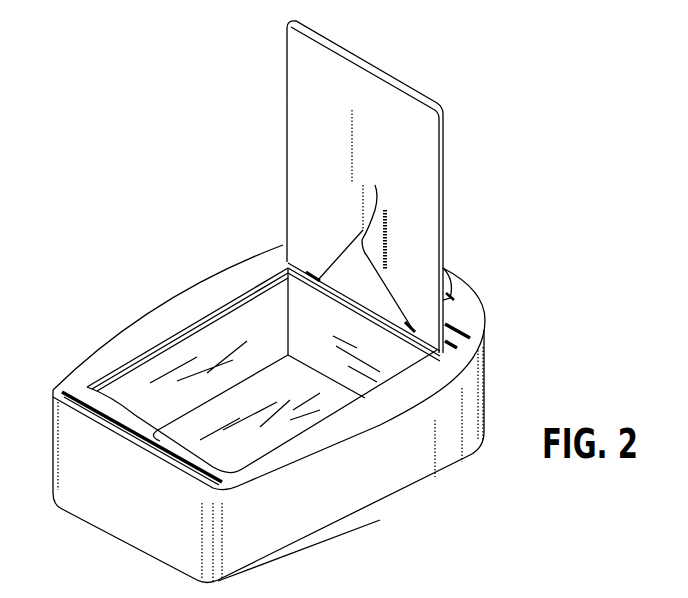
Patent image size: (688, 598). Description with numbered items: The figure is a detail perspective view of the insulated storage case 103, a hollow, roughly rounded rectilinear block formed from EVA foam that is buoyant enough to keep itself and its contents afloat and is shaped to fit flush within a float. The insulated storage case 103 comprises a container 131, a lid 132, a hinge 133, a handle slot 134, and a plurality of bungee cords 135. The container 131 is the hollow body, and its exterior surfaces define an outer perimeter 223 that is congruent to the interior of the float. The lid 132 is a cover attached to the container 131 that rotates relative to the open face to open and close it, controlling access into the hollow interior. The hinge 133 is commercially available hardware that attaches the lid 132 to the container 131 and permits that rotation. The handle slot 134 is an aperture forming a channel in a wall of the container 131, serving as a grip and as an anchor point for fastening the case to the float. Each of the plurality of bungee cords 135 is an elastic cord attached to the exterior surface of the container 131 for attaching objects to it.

The insulated storage case 103 is at (172, 246).
The container 131 is at (420, 447).
The lid 132 is at (418, 211).
The hinge 133 is at (360, 243).
The handle slot 134 is at (449, 298).
The plurality of bungee cords 135 is at (168, 443).
The outer perimeter 223 is at (357, 477).